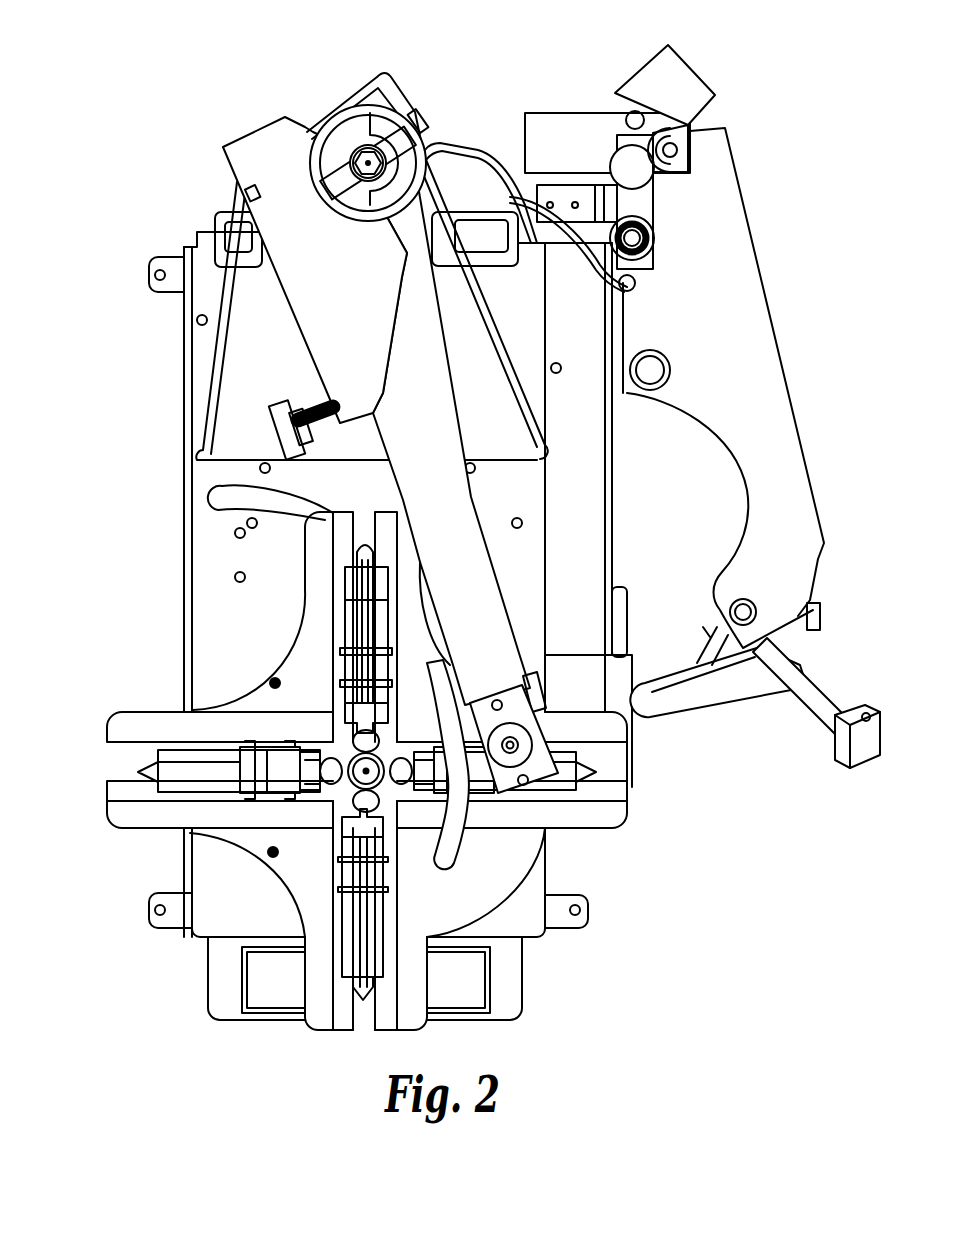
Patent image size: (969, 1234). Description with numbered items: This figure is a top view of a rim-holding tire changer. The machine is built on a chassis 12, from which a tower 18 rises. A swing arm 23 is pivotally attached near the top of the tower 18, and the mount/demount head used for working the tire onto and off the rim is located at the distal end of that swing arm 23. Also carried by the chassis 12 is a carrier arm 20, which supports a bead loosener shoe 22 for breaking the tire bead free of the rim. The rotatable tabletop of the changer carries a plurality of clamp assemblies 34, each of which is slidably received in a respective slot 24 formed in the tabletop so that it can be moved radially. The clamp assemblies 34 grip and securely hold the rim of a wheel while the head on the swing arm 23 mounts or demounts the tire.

The chassis 12 is at (182, 640).
The tower 18 is at (350, 130).
The carrier arm 20 is at (727, 254).
The bead loosener shoe 22 is at (723, 707).
The swing arm 23 is at (473, 512).
The slot 24 is at (90, 772).
The clamp assembly 34 is at (140, 744).